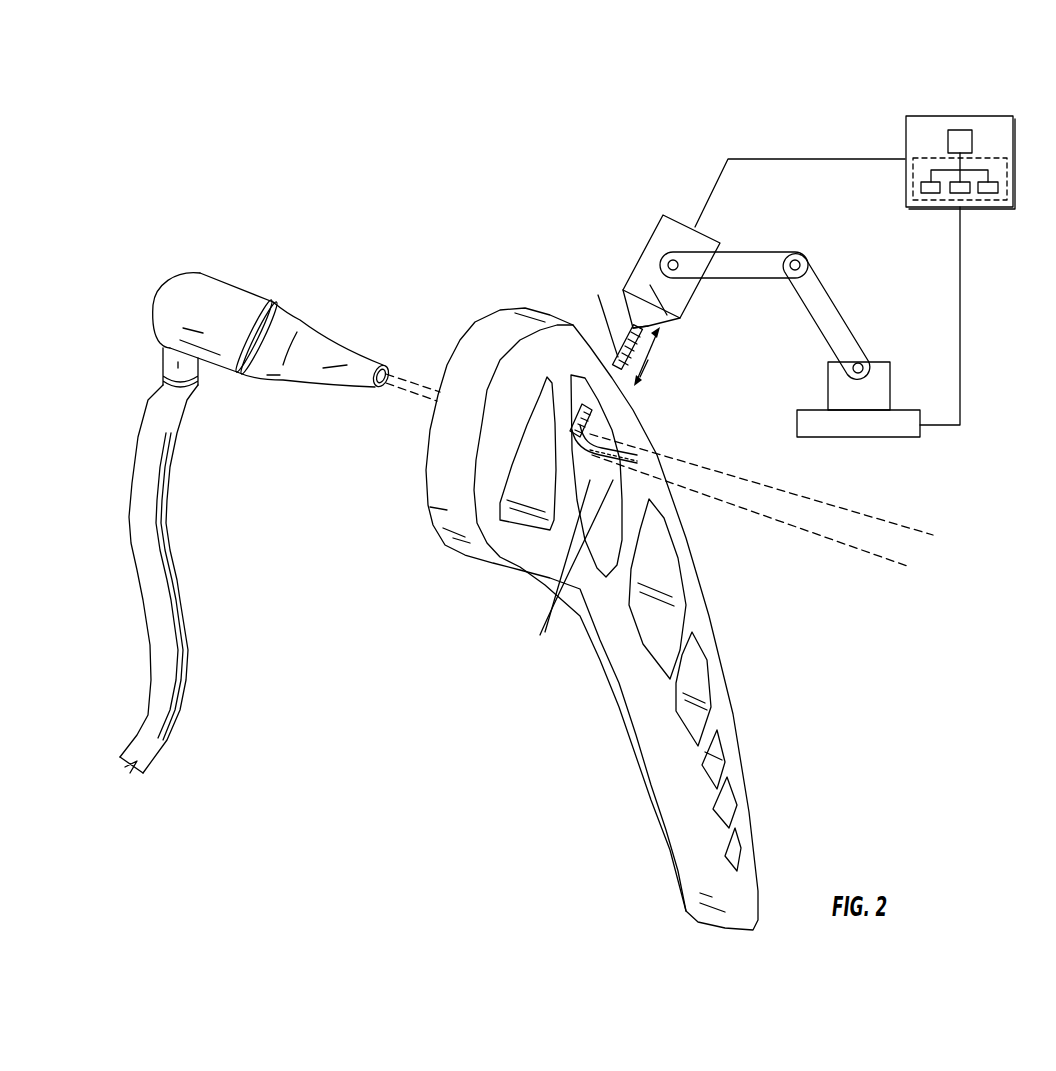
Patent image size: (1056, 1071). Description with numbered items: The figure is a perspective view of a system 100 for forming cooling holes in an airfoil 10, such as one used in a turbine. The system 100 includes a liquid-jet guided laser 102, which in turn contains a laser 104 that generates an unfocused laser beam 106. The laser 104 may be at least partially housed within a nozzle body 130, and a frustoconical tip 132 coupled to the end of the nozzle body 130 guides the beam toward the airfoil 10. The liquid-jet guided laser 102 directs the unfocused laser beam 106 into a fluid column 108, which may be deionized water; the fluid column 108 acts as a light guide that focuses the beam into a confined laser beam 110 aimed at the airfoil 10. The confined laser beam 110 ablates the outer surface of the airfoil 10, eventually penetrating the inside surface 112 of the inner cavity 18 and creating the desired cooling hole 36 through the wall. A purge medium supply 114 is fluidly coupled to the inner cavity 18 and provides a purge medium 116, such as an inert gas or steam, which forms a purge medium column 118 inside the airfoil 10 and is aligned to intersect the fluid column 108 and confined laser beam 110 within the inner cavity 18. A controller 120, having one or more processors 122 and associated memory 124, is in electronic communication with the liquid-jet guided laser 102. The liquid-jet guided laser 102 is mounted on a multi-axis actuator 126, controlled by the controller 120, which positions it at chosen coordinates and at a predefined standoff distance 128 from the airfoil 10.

The airfoil 10 is at (732, 661).
The inner cavity 18 is at (571, 377).
The cooling hole 36 is at (598, 418).
The system 100 is at (866, 708).
The liquid-jet guided laser 102 is at (762, 290).
The laser 104 is at (721, 226).
The unfocused laser beam 106 is at (660, 290).
The fluid column 108 is at (655, 343).
The confined laser beam 110 is at (642, 316).
The inside surface 112 is at (569, 571).
The purge medium supply 114 is at (268, 395).
The purge medium 116 is at (437, 384).
The purge medium column 118 is at (850, 556).
The controller 120 is at (933, 143).
The processor 122 is at (963, 130).
The memory 124 is at (925, 116).
The multi-axis actuator 126 is at (860, 325).
The standoff distance 128 is at (640, 377).
The nozzle body 130 is at (640, 253).
The frustoconical tip 132 is at (667, 323).